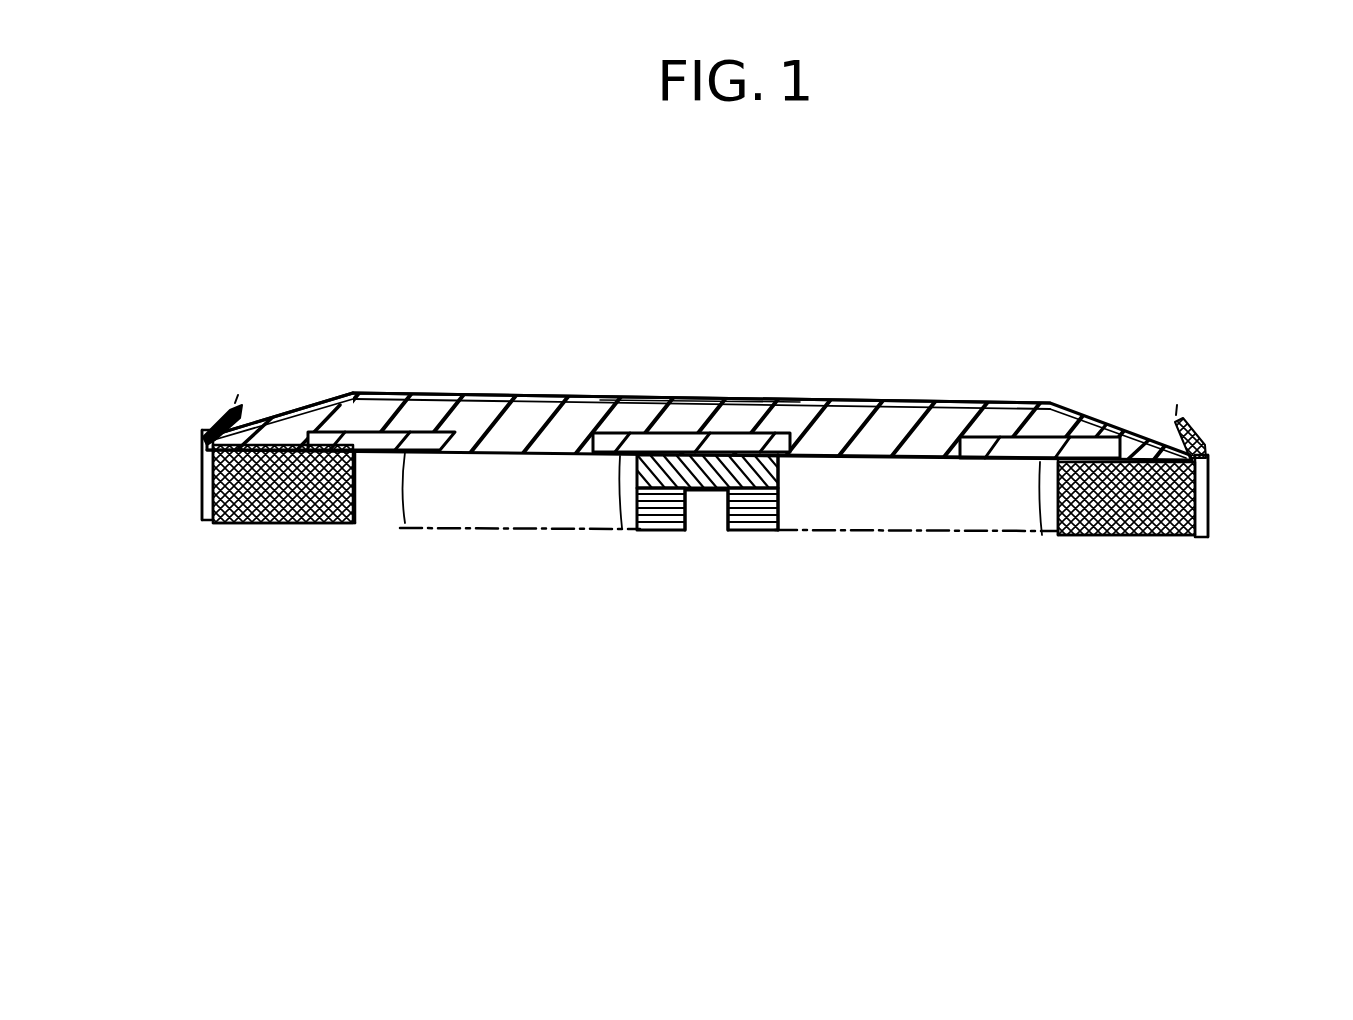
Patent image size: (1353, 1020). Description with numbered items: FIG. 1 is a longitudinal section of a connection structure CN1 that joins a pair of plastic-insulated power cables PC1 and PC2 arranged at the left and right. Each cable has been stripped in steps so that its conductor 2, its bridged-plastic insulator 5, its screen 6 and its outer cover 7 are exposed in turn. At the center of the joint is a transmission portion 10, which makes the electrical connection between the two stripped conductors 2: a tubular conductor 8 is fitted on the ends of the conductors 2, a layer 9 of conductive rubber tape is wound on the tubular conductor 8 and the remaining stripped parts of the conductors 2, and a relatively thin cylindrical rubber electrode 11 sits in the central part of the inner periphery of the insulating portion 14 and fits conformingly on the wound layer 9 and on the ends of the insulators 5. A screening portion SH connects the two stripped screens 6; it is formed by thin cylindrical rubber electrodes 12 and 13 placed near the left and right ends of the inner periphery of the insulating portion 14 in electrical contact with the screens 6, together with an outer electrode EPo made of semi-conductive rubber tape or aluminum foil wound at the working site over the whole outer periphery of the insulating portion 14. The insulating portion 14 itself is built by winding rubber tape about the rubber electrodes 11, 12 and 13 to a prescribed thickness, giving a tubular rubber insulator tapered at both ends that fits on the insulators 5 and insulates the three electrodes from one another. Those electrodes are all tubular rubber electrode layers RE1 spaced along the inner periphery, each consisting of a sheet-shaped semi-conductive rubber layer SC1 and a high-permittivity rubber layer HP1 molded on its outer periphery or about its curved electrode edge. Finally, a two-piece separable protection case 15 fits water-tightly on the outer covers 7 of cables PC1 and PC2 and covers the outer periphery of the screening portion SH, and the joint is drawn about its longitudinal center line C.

The stripped conductor 2 is at (745, 530).
The bridged-plastic insulator 5 is at (487, 530).
The screen 6 is at (315, 525).
The outer cover 7 is at (210, 522).
The tubular conductor 8 is at (700, 508).
The layer of conductive rubber tape 9 is at (793, 456).
The transmission portion 10 is at (715, 540).
The cylindrical rubber electrode 11 is at (822, 460).
The cylindrical rubber electrode 12 is at (292, 436).
The cylindrical rubber electrode 13 is at (1108, 444).
The insulating portion 14 is at (577, 398).
The protection case 15 is at (220, 440).
The screening portion SH is at (641, 393).
The outer electrode EPo is at (693, 398).
The connection structure CN1 is at (826, 350).
The high-permittivity rubber layer HP1 is at (360, 433).
The semi-conductive rubber layer SC1 is at (403, 452).
The power cable PC1 is at (196, 471).
The power cable PC2 is at (1213, 494).
The center line C is at (995, 538).
The tubular rubber electrode layer RE1 is at (280, 355).